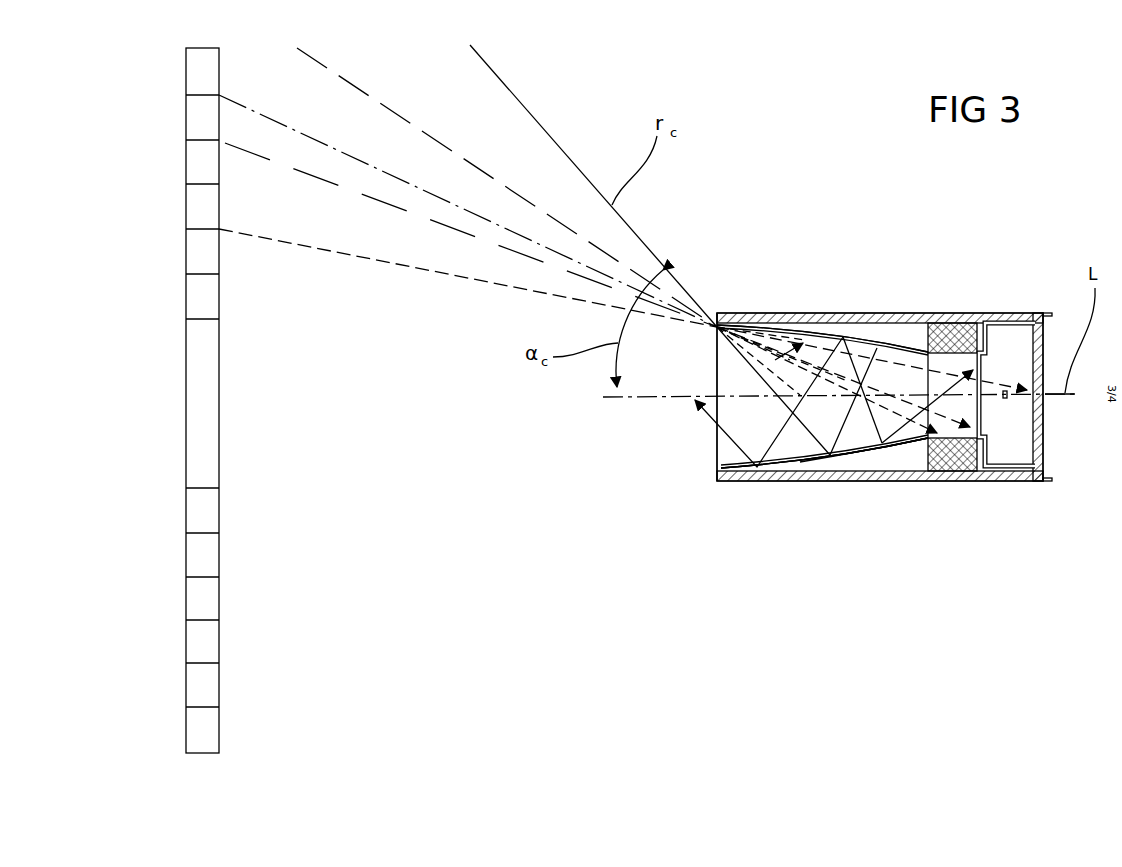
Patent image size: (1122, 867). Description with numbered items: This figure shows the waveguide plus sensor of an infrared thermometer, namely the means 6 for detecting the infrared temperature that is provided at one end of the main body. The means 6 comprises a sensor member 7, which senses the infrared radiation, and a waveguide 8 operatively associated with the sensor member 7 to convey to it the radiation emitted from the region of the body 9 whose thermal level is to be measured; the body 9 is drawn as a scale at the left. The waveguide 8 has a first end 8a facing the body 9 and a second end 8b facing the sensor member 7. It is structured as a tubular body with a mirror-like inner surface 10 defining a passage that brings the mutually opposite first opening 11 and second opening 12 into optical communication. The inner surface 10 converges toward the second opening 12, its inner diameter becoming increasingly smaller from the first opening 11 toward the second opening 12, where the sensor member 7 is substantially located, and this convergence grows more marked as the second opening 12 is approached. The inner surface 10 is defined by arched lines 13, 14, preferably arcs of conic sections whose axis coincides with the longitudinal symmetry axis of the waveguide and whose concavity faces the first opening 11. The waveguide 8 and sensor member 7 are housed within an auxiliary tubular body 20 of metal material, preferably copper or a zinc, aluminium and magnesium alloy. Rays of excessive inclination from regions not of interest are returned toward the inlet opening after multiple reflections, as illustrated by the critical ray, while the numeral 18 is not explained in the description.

The means for detecting the infrared temperature 6 is at (745, 500).
The sensor member 7 is at (1005, 399).
The waveguide 8 is at (829, 333).
The first end 8a is at (718, 462).
The second end 8b is at (912, 348).
The body 9 is at (206, 426).
The inner surface 10 is at (790, 470).
The first opening 11 is at (723, 364).
The second opening 12 is at (929, 325).
The arched line 13 is at (790, 480).
The arched line 14 is at (848, 448).
The lower fixing member 18 is at (927, 455).
The auxiliary tubular body 20 is at (770, 326).